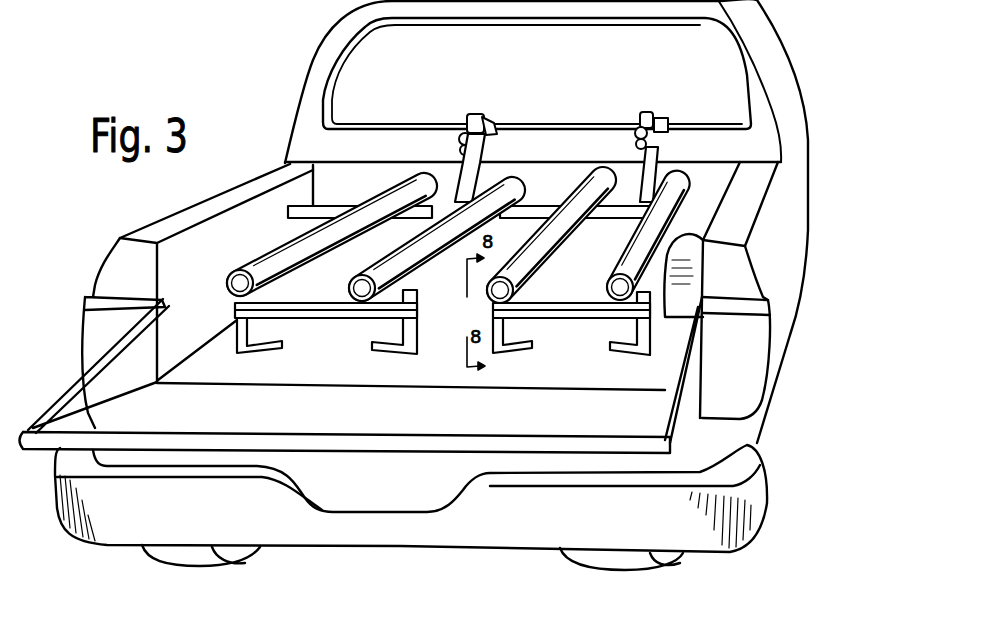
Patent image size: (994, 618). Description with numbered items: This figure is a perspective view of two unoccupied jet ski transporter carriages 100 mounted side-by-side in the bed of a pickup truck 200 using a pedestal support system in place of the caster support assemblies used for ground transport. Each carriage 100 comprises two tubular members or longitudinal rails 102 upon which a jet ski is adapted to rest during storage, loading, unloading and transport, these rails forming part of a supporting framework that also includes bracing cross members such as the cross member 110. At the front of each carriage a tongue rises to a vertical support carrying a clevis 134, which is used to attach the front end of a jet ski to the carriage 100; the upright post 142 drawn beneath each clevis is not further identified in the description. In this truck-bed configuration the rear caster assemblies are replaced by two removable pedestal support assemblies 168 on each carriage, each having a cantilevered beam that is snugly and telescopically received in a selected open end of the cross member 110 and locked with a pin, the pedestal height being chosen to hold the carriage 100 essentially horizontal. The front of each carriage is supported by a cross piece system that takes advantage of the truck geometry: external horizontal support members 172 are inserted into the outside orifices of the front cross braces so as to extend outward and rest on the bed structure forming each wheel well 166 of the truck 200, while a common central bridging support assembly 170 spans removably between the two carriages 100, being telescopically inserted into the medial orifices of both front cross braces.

The carriage 100 is at (548, 298).
The longitudinal rails 102 is at (436, 198).
The cross member 110 is at (419, 287).
The clevis 134 is at (490, 134).
The upright post 142 is at (462, 158).
The wheel well 166 is at (262, 240).
The pedestal support assembly 168 is at (243, 352).
The bridging support assembly 170 is at (531, 166).
The horizontal support members 172 is at (325, 206).
The pickup truck 200 is at (449, 285).